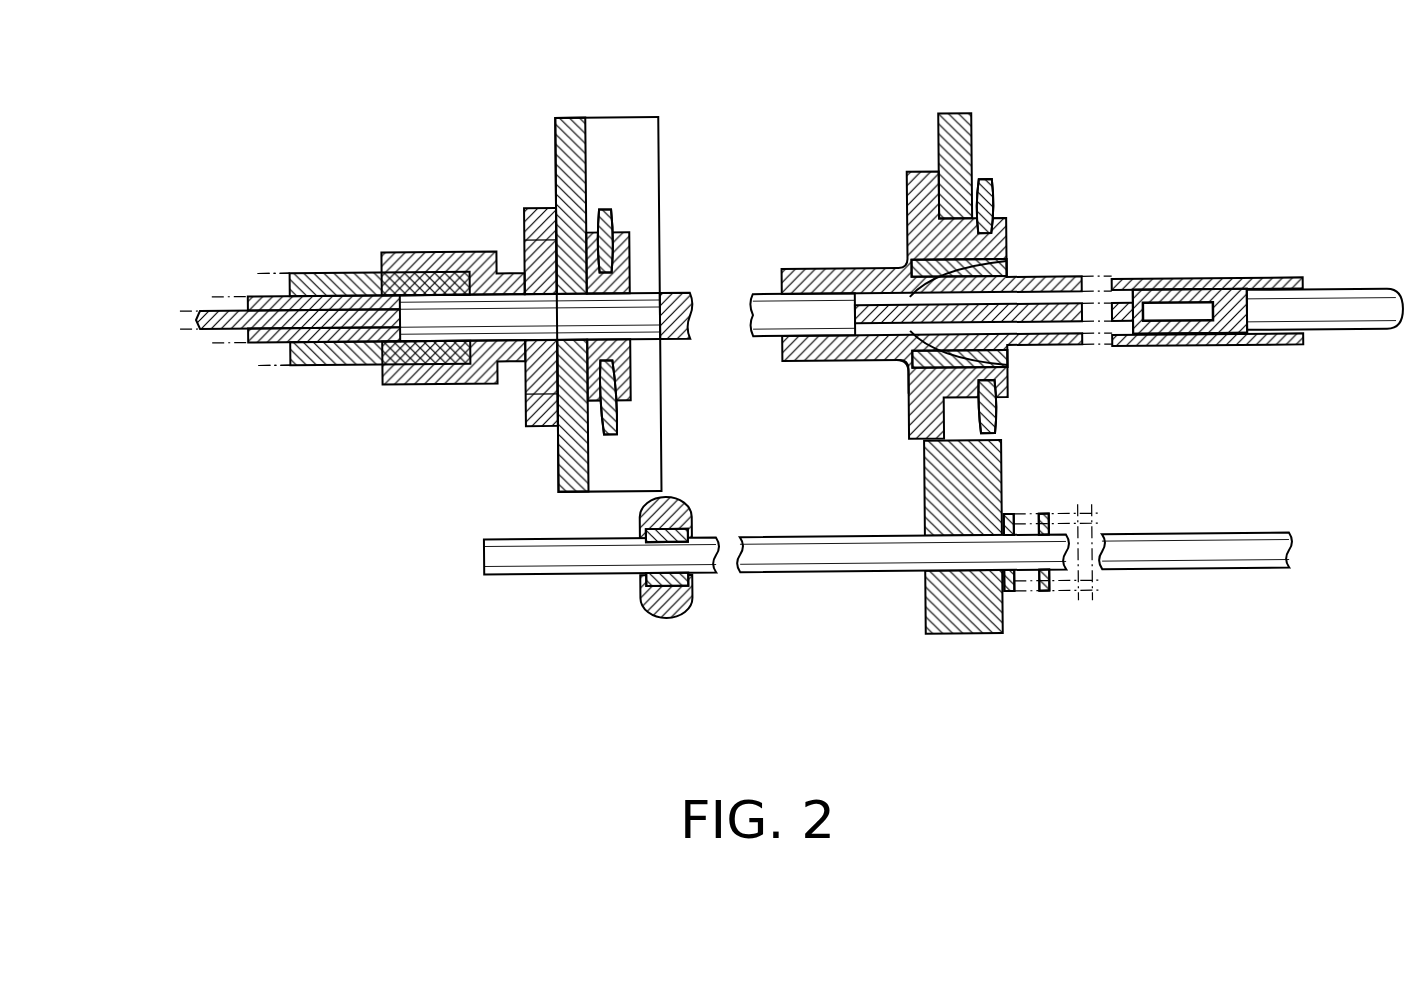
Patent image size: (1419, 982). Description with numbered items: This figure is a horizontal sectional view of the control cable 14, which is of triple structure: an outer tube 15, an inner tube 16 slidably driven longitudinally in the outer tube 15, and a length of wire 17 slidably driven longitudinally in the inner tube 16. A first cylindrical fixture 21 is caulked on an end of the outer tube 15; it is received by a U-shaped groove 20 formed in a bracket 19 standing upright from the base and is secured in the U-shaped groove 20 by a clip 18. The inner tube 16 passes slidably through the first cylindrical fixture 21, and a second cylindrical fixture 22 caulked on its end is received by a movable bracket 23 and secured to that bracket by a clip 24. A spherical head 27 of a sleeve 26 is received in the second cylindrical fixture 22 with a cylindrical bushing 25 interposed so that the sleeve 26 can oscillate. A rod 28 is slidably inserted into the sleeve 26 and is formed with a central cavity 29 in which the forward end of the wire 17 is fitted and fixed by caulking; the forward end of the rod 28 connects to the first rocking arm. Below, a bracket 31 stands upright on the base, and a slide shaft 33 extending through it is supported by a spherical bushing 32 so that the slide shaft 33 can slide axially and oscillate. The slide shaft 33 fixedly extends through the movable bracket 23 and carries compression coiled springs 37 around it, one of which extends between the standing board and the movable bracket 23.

The control cable 14 is at (247, 247).
The outer tube 15 is at (331, 274).
The inner tube 16 is at (262, 297).
The wire 17 is at (221, 331).
The clip 18 is at (606, 214).
The bracket 19 is at (557, 130).
The U-shaped groove 20 is at (527, 212).
The first cylindrical fixture 21 is at (470, 254).
The second cylindrical fixture 22 is at (882, 273).
The movable bracket 23 is at (932, 496).
The clip 24 is at (988, 188).
The cylindrical bushing 25 is at (1008, 262).
The sleeve 26 is at (1196, 287).
The spherical head 27 is at (910, 374).
The rod 28 is at (1346, 340).
The central cavity 29 is at (1190, 343).
The bracket 31 is at (666, 622).
The spherical bushing 32 is at (642, 600).
The slide shaft 33 is at (841, 577).
The compression coiled springs 37 is at (1036, 600).